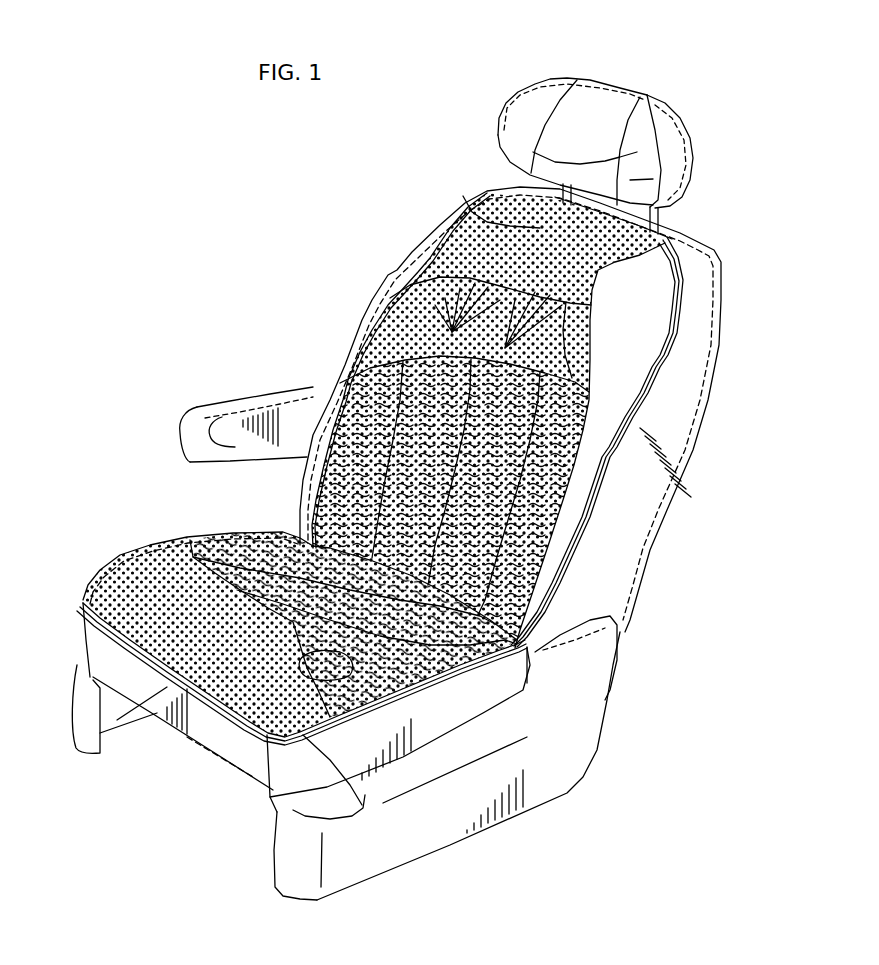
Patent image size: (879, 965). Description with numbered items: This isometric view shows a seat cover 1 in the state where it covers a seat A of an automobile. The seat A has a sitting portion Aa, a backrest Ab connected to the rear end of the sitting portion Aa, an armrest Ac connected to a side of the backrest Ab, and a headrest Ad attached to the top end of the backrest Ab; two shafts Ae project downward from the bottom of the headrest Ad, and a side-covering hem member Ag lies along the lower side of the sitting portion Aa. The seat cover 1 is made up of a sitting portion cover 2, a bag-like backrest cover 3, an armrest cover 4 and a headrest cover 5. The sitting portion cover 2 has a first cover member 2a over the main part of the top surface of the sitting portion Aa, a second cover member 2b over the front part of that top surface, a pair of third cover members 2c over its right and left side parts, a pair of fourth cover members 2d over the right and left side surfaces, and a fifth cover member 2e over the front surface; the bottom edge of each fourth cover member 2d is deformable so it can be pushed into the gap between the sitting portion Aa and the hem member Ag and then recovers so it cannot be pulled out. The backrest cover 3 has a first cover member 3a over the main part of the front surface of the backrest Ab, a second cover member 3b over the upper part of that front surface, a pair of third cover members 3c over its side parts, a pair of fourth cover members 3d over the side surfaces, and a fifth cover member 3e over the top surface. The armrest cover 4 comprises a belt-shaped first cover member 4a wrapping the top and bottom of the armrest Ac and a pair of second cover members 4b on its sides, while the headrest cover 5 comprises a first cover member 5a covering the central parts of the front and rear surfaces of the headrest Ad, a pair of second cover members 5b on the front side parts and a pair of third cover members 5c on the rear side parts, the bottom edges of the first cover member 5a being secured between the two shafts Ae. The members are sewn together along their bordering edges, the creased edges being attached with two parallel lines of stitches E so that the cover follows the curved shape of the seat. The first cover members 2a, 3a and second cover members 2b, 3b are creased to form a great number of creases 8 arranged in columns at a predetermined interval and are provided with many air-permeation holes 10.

The seat cover 1 is at (289, 292).
The sitting portion cover 2 is at (145, 540).
The first cover member 2a is at (353, 597).
The second cover member 2b is at (206, 623).
The third cover members 2c is at (271, 673).
The fourth cover members 2d is at (169, 751).
The fifth cover member 2e is at (183, 736).
The backrest cover 3 is at (734, 353).
The first cover member 3a is at (488, 420).
The second cover member 3b is at (468, 204).
The third cover members 3c is at (537, 364).
The fourth cover members 3d is at (686, 537).
The fifth cover member 3e is at (661, 221).
The armrest cover 4 is at (226, 385).
The first cover member 4a is at (259, 391).
The second cover members 4b is at (172, 434).
The headrest cover 5 is at (496, 97).
The first cover member 5a is at (592, 115).
The second cover members 5b is at (493, 160).
The third cover members 5c is at (690, 151).
The creases 8 is at (423, 502).
The air-permeation holes 10 is at (346, 444).
The seat A is at (62, 702).
The sitting portion Aa is at (209, 809).
The backrest Ab is at (630, 632).
The armrest Ac is at (280, 359).
The headrest Ad is at (574, 75).
The shafts Ae is at (711, 203).
The side-covering hem member Ag is at (445, 771).
The stitches E is at (423, 416).